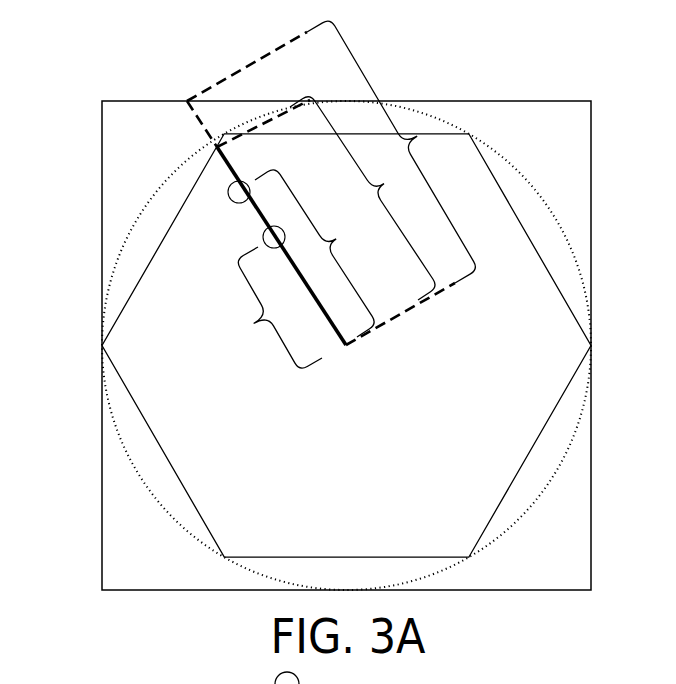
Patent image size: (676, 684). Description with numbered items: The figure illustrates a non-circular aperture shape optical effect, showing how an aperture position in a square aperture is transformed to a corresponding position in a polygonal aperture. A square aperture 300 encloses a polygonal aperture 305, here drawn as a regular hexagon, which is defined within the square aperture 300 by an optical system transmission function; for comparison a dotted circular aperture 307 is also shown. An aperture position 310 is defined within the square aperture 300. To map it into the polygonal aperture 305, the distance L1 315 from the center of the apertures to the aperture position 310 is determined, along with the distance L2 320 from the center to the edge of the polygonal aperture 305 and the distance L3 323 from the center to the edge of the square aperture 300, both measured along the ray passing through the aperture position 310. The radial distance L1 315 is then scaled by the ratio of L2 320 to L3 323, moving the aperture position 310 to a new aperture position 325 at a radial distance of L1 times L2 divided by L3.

The square aperture 300 is at (103, 541).
The polygonal aperture 305 is at (162, 244).
The circular aperture 307 is at (130, 461).
The aperture position 310 is at (241, 191).
The distance L1 315 is at (321, 248).
The distance L2 320 is at (369, 193).
The distance L3 323 is at (399, 147).
The new aperture position 325 is at (237, 313).